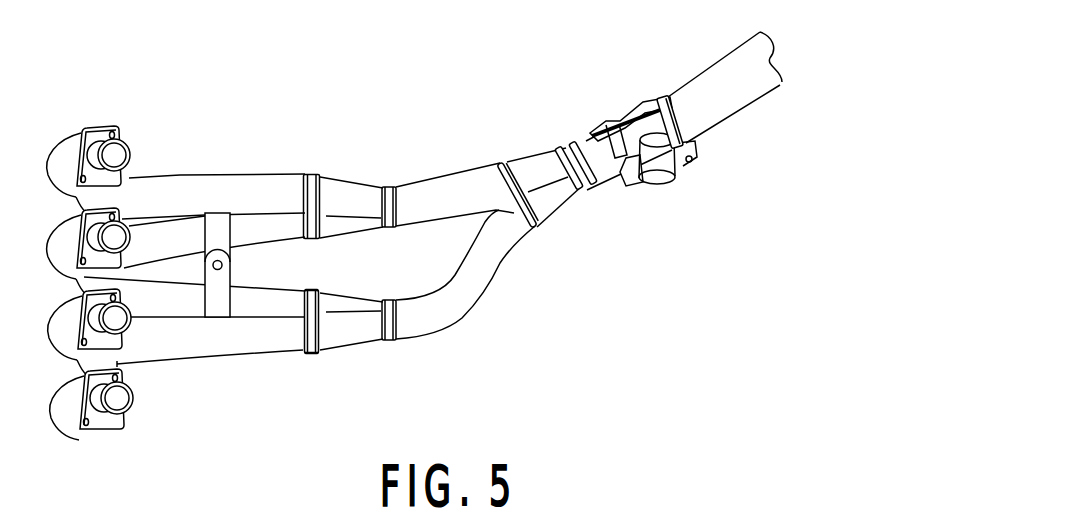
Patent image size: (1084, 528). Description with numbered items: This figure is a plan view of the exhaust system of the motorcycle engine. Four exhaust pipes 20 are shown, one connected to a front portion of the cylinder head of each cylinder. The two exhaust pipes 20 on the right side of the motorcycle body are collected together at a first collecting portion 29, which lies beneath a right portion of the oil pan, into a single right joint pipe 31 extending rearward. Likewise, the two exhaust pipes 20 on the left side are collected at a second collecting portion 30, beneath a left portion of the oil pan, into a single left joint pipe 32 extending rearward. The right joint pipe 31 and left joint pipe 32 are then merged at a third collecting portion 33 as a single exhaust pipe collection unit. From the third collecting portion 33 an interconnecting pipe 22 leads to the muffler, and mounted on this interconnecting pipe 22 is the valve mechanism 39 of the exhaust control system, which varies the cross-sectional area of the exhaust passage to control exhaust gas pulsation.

The exhaust pipe 20 is at (185, 230).
The interconnecting pipe 22 is at (712, 87).
The first collecting portion 29 is at (359, 198).
The second collecting portion 30 is at (358, 338).
The right joint pipe 31 is at (455, 187).
The left joint pipe 32 is at (442, 318).
The third collecting portion 33 is at (549, 163).
The valve mechanism 39 is at (655, 187).